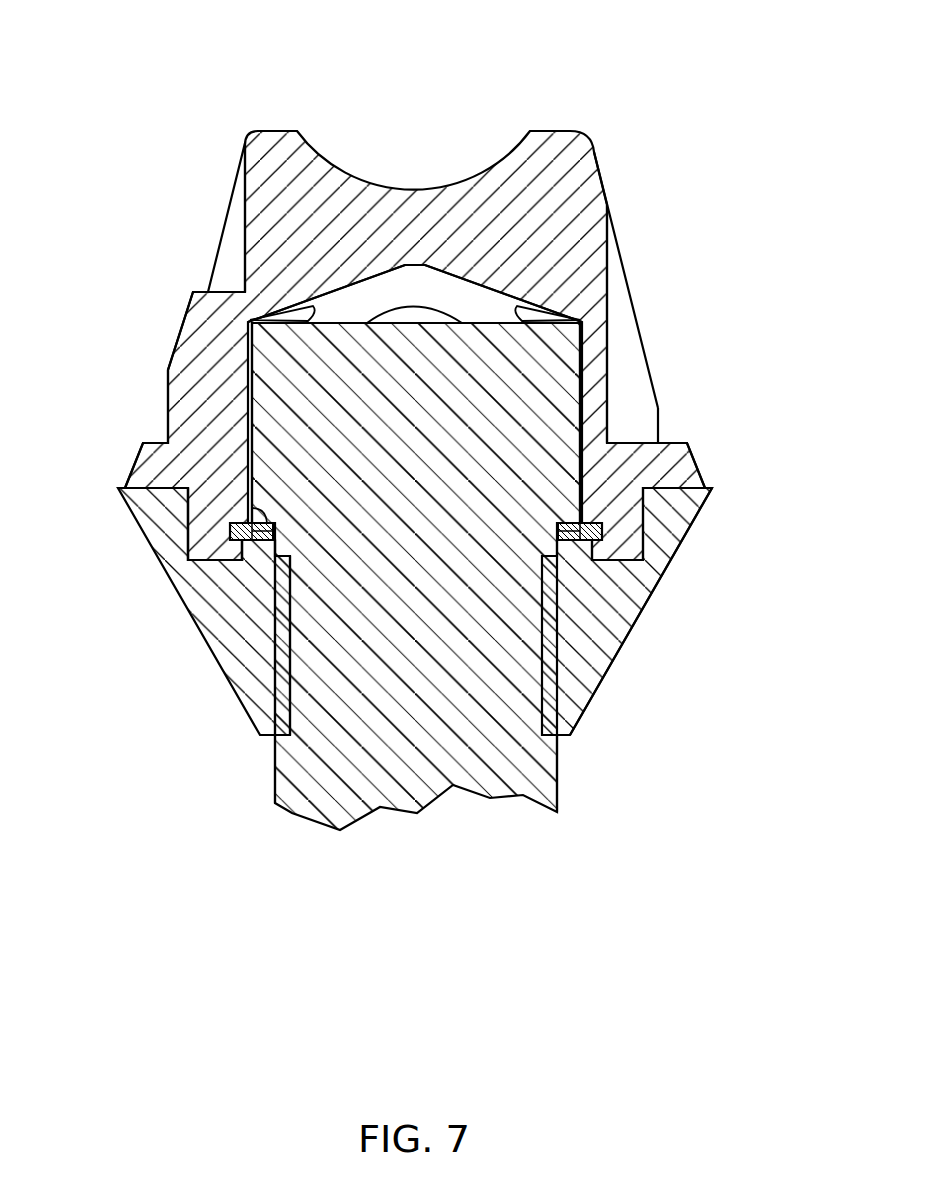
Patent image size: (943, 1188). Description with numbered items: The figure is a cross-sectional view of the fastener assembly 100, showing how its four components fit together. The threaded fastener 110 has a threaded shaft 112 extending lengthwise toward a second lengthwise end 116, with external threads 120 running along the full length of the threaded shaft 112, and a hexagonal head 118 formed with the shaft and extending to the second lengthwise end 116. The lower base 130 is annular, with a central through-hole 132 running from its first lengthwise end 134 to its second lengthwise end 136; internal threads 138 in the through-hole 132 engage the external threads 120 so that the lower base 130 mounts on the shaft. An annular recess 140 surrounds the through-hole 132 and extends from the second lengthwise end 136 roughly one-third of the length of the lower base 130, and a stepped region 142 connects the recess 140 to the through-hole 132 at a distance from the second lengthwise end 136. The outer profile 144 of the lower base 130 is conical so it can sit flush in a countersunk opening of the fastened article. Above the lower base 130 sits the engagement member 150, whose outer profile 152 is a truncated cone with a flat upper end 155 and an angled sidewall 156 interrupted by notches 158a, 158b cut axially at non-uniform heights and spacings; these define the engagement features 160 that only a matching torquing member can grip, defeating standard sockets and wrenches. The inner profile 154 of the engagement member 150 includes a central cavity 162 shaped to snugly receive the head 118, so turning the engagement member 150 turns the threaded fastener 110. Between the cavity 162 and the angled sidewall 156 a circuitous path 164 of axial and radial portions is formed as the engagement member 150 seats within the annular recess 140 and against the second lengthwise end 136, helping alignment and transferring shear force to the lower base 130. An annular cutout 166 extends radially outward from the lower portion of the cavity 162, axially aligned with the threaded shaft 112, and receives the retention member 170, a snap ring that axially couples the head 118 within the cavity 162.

The fastener assembly 100 is at (646, 63).
The threaded fastener 110 is at (550, 782).
The threaded shaft 112 is at (278, 782).
The second lengthwise end 116 is at (500, 325).
The hexagonal head 118 is at (550, 387).
The external threads 120 is at (558, 758).
The lower base 130 is at (641, 600).
The central through-hole 132 is at (280, 690).
The first lengthwise end 134 is at (261, 738).
The second lengthwise end 136 is at (678, 487).
The internal threads 138 is at (283, 636).
The annular recess 140 is at (187, 541).
The stepped region 142 is at (253, 541).
The outer profile 144 is at (600, 683).
The engagement member 150 is at (588, 145).
The outer profile 152 is at (194, 333).
The inner profile 154 is at (315, 304).
The flat upper end 155 is at (447, 131).
The angled sidewall 156 is at (637, 326).
The notch 158a is at (226, 205).
The notch 158b is at (661, 420).
The engagement features 160 is at (745, 270).
The central cavity 162 is at (390, 292).
The circuitous path 164 is at (605, 533).
The annular cutout 166 is at (644, 515).
The retention member 170 is at (233, 527).